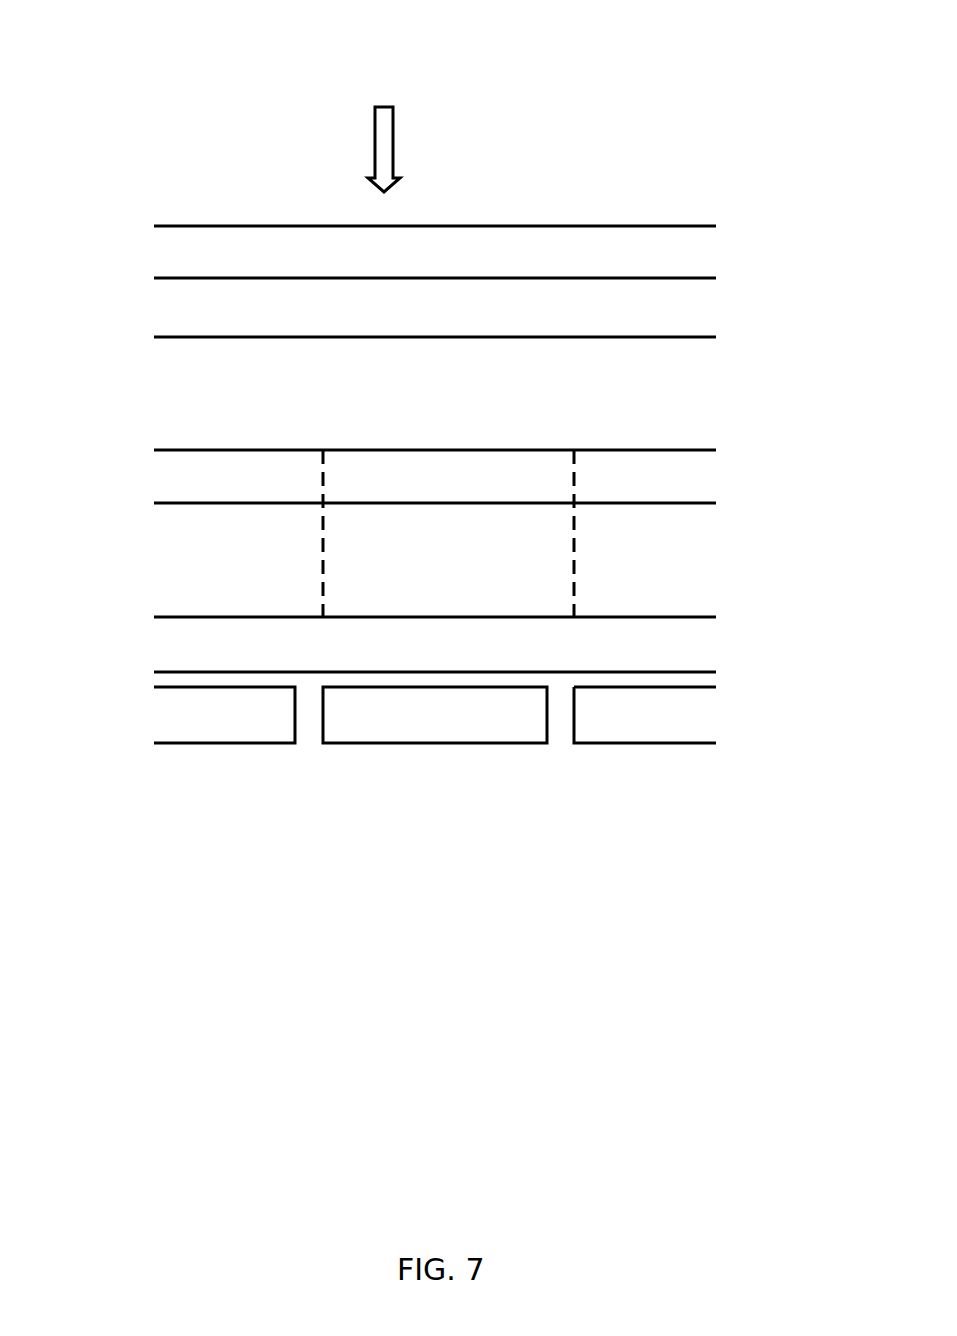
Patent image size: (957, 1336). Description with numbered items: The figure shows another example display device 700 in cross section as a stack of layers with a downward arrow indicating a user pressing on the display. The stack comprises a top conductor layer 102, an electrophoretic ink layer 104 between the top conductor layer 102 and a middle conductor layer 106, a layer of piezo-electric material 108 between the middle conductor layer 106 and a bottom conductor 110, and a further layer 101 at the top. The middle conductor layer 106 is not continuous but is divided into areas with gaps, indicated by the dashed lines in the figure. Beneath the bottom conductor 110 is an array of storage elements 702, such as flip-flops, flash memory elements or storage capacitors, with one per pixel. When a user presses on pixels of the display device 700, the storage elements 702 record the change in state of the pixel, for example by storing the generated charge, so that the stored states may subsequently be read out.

The display device 700 is at (424, 405).
The first layer 101 is at (168, 256).
The top conductor layer 102 is at (168, 311).
The electrophoretic ink layer 104 is at (168, 394).
The middle conductor layer 106 is at (168, 478).
The layer of piezo-electric material 108 is at (168, 562).
The bottom conductor 110 is at (168, 646).
The storage elements 702 is at (435, 728).